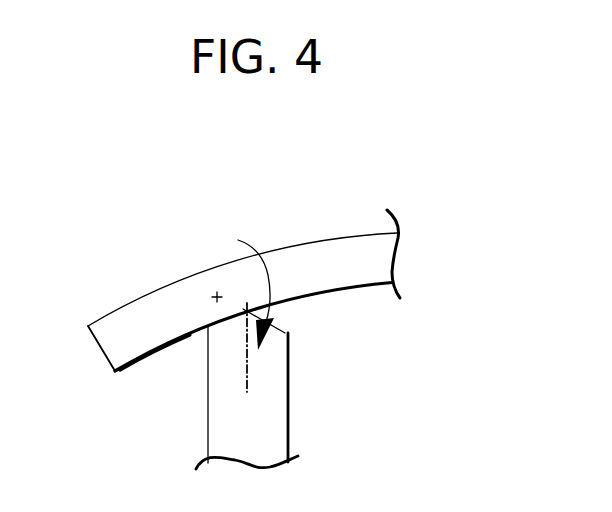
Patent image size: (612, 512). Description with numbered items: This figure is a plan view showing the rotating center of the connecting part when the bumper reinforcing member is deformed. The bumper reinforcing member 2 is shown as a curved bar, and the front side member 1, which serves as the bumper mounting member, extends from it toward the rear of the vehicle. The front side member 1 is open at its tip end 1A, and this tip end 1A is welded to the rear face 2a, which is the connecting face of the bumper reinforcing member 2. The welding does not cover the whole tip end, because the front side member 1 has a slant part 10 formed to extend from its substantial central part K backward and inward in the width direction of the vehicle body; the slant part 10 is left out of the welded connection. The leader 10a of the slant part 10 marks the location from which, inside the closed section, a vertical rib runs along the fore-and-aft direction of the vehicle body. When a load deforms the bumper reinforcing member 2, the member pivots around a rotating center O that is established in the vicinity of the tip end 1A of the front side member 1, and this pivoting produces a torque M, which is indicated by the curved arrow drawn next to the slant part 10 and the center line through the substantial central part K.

The front side member 1 is at (296, 434).
The tip end 1A is at (232, 334).
The bumper reinforcing member 2 is at (339, 229).
The rear face 2a is at (155, 357).
The slant part 10 is at (285, 333).
The leader of the slant part 10a is at (247, 310).
The rotating center O is at (214, 295).
The torque M is at (270, 277).
The substantial central part K is at (248, 380).